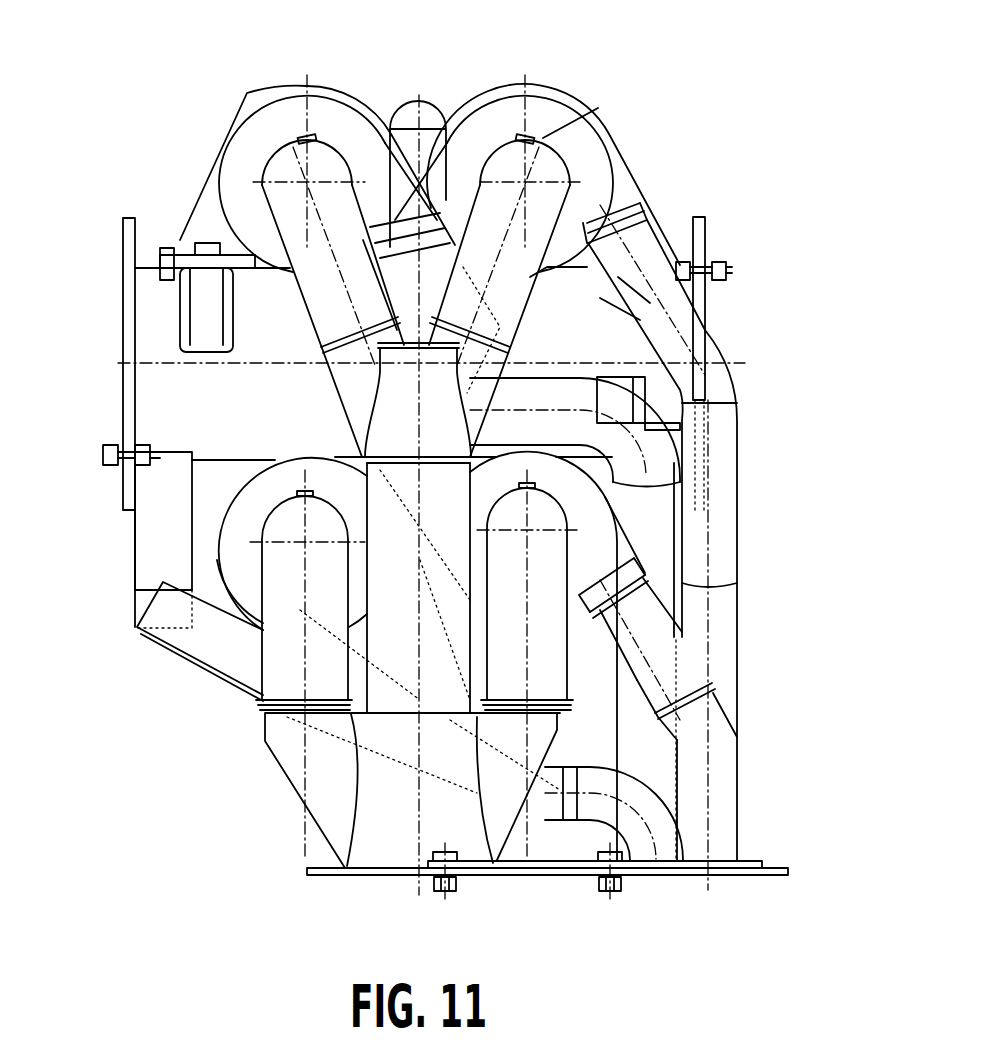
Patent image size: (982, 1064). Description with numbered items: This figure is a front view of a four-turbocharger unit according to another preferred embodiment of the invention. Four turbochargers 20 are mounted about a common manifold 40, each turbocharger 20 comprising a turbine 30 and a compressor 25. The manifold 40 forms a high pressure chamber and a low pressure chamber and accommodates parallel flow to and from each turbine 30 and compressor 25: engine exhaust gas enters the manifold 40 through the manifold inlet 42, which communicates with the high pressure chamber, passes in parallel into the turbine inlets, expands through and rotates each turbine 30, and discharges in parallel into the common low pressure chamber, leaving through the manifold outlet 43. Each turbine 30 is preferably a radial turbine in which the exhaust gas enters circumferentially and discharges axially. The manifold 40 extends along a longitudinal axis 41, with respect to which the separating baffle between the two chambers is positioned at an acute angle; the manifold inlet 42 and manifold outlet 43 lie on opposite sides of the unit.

The turbocharger 20 is at (268, 80).
The compressor 25 is at (262, 133).
The turbine 30 is at (207, 183).
The manifold 40 is at (165, 405).
The longitudinal axis 41 is at (733, 362).
The manifold inlet 42 is at (706, 295).
The manifold outlet 43 is at (123, 318).